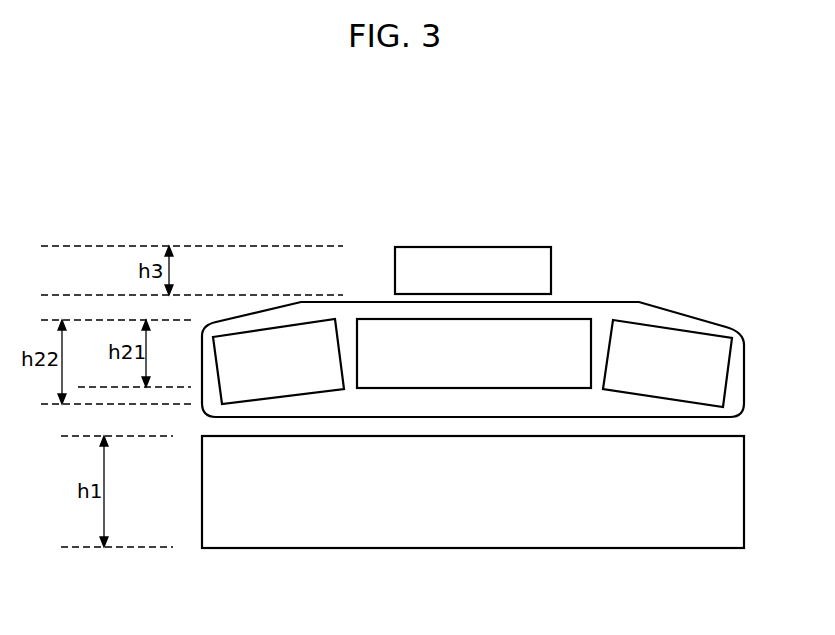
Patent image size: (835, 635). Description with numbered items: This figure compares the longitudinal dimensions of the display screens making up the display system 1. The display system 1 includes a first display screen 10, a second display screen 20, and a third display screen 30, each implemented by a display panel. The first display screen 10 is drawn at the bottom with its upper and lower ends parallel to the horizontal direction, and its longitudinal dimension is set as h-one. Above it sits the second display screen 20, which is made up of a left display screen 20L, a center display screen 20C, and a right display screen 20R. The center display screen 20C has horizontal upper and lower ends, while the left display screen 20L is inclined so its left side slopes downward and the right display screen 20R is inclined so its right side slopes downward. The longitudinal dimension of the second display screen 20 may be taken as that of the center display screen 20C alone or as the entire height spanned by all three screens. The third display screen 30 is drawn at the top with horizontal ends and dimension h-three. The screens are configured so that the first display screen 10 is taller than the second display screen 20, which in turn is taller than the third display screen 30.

The display system 1 is at (487, 210).
The first display screen 10 is at (693, 533).
The second display screen 20 is at (608, 315).
The left display screen 20L is at (314, 382).
The center display screen 20C is at (453, 377).
The right display screen 20R is at (675, 340).
The third display screen 30 is at (538, 273).